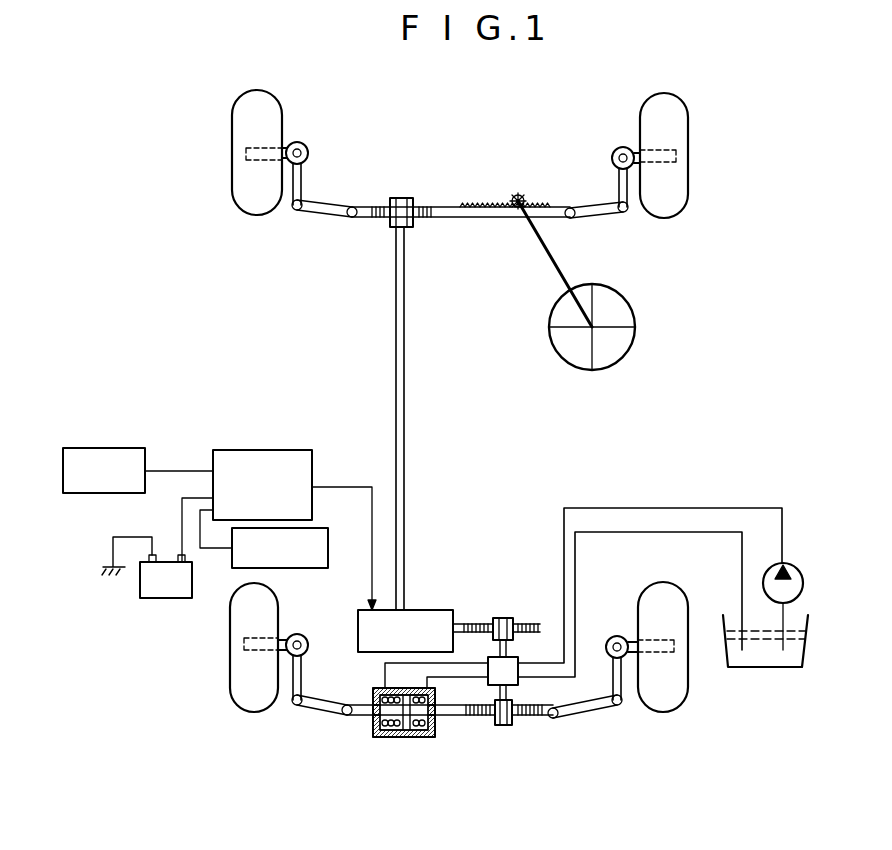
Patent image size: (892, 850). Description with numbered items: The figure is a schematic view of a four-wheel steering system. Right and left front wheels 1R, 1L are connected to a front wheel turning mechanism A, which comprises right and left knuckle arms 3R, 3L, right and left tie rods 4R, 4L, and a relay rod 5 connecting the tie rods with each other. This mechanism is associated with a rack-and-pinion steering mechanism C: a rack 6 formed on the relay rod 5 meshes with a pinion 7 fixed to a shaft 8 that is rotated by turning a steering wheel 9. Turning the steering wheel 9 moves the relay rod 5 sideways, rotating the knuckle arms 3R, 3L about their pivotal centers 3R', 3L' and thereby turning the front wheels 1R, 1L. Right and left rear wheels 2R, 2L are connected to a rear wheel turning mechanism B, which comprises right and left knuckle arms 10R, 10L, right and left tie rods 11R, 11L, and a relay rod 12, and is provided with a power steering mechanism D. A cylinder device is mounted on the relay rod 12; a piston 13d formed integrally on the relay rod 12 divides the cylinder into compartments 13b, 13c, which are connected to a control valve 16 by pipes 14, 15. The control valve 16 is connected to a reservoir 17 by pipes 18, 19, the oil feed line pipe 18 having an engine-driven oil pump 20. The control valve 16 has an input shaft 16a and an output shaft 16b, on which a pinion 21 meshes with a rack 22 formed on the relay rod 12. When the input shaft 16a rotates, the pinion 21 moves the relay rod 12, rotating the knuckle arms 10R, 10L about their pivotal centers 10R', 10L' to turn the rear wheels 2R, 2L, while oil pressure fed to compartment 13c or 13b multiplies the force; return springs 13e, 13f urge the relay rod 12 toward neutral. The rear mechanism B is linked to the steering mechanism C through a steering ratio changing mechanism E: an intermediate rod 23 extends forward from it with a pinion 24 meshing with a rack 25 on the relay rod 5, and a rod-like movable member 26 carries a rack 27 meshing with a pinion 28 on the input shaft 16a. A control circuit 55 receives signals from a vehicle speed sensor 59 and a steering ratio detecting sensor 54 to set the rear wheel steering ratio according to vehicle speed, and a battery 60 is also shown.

The left front wheel 1L is at (235, 111).
The right front wheel 1R is at (688, 131).
The left rear wheel 2L is at (229, 691).
The right rear wheel 2R is at (688, 702).
The left knuckle arm 3L is at (324, 184).
The right knuckle arm 3R is at (594, 182).
The pivotal center 3L' is at (305, 127).
The pivotal center 3R' is at (610, 133).
The left tie rod 4L is at (323, 216).
The right tie rod 4R is at (610, 218).
The relay rod 5 is at (478, 218).
The rack 6 is at (496, 204).
The pinion 7 is at (518, 198).
The shaft 8 is at (550, 250).
The steering wheel 9 is at (635, 327).
The left knuckle arm 10L is at (265, 706).
The right knuckle arm 10R is at (650, 703).
The pivotal center 10L' is at (304, 625).
The pivotal center 10R' is at (608, 627).
The left tie rod 11L is at (327, 717).
The right tie rod 11R is at (598, 715).
The relay rod 12 is at (460, 718).
The compartment 13b is at (383, 742).
The compartment 13c is at (416, 740).
The piston 13d is at (396, 695).
The return spring 13e is at (382, 705).
The return spring 13f is at (430, 698).
The pipe 14 is at (460, 660).
The pipe 15 is at (470, 676).
The control valve 16 is at (522, 680).
The input shaft 16a is at (512, 646).
The output shaft 16b is at (510, 692).
The reservoir 17 is at (763, 667).
The pipe 18 is at (655, 508).
The pipe 19 is at (676, 532).
The oil pump 20 is at (798, 570).
The pinion 21 is at (523, 724).
The rack 22 is at (504, 728).
The intermediate rod 23 is at (406, 442).
The pinion 24 is at (402, 198).
The rack 25 is at (420, 219).
The rod-like movable member 26 is at (449, 628).
The rack 27 is at (520, 628).
The pinion 28 is at (500, 618).
The steering ratio detecting sensor 54 is at (328, 536).
The control circuit 55 is at (264, 453).
The vehicle speed sensor 59 is at (121, 448).
The battery 60 is at (170, 598).
The front wheel turning mechanism A is at (328, 148).
The rear wheel turning mechanism B is at (316, 736).
The steering mechanism C is at (552, 342).
The power steering mechanism D is at (440, 740).
The steering ratio changing mechanism E is at (360, 611).